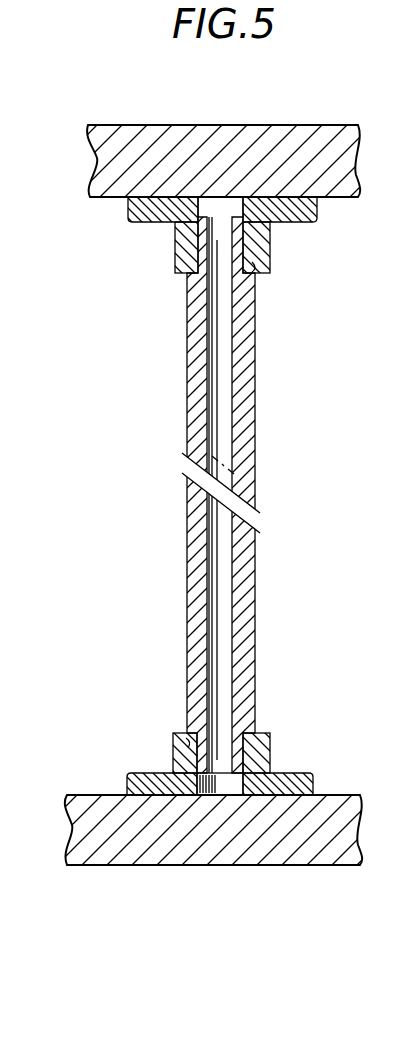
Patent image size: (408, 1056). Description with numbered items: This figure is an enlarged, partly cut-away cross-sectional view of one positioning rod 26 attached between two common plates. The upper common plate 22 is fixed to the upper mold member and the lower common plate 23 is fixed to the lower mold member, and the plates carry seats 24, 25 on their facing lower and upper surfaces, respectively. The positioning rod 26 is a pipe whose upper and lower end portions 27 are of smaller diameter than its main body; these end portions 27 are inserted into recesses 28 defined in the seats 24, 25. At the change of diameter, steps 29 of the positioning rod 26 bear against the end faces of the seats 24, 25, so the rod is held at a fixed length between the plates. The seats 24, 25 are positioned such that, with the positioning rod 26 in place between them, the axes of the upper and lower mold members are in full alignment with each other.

The common plate 22 is at (142, 137).
The common plate 23 is at (128, 855).
The seat 24 is at (170, 215).
The seat 25 is at (142, 775).
The positioning rod 26 is at (195, 382).
The end portion 27 is at (247, 248).
The recess 28 is at (237, 199).
The step 29 is at (252, 267).